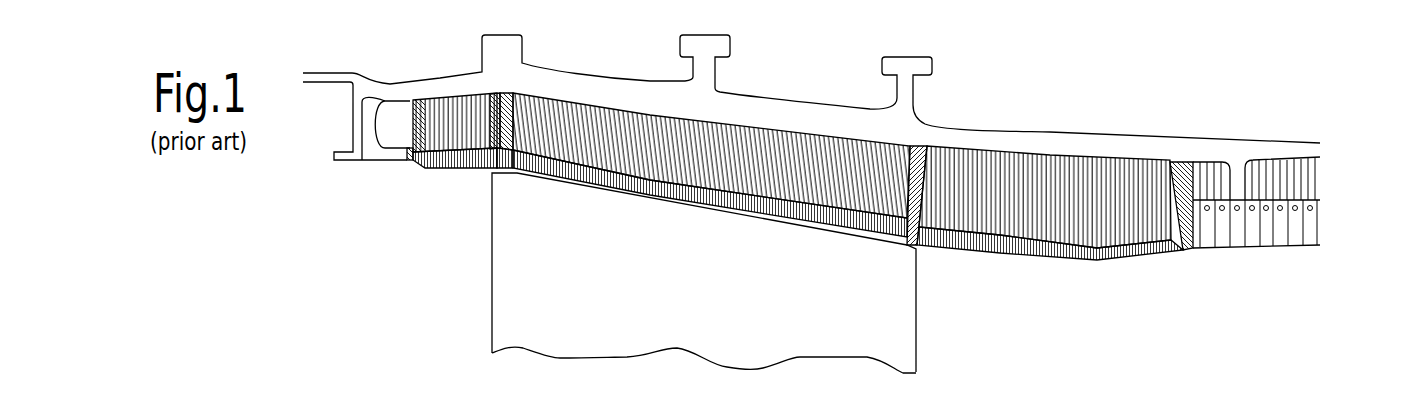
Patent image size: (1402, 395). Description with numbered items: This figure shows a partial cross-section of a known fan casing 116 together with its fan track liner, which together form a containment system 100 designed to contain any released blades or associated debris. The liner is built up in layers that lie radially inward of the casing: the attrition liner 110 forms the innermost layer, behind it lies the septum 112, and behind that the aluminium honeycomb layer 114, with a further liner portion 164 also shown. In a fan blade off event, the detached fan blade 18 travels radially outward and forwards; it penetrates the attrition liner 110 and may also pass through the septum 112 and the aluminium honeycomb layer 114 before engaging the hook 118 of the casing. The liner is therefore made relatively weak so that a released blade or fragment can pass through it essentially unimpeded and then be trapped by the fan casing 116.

The turbomachine 100 is at (974, 57).
The attrition liner 110 is at (527, 172).
The septum 112 is at (833, 177).
The aluminium honeycomb layer 114 is at (767, 148).
The housing 116 is at (1063, 140).
The hook 118 is at (377, 150).
The sealing ring 164 is at (1137, 253).
The fan blade 18 is at (697, 334).